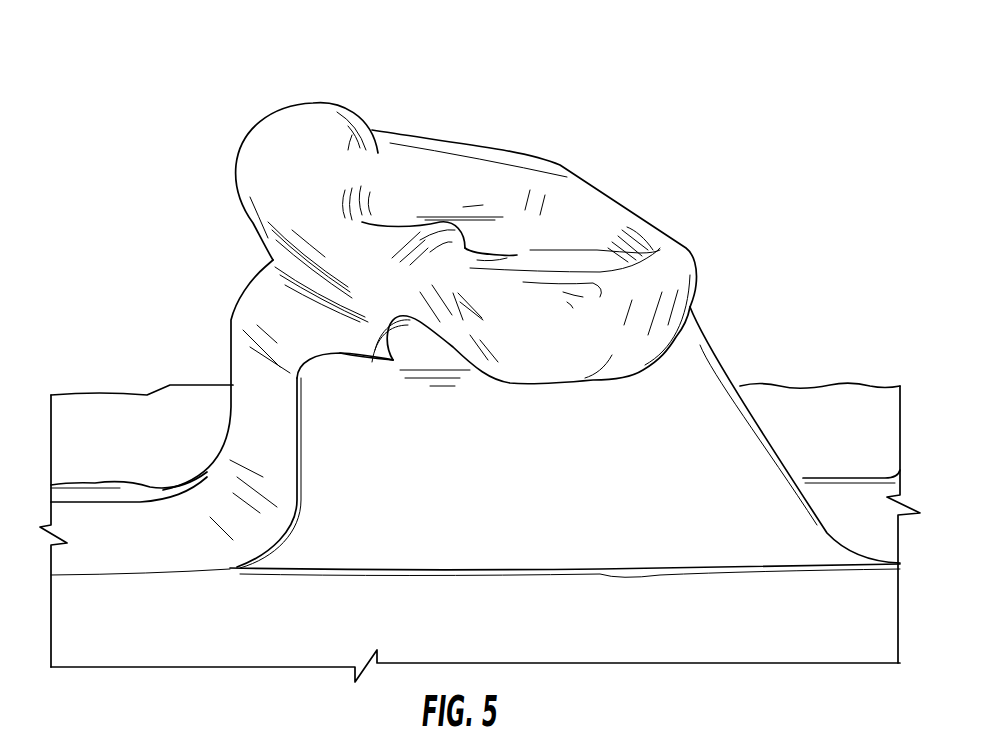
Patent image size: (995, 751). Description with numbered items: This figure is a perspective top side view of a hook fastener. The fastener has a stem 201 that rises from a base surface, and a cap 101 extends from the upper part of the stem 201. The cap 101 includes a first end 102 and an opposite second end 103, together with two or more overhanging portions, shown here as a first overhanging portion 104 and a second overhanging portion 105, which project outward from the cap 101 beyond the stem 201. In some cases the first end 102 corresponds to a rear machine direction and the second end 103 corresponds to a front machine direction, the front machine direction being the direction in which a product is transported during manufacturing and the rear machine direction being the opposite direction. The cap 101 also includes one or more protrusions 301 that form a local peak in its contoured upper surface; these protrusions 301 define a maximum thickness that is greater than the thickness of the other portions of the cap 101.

The cap 101 is at (465, 180).
The first end 102 is at (286, 227).
The second end 103 is at (645, 240).
The first overhanging portion 104 is at (338, 100).
The second overhanging portion 105 is at (553, 345).
The stem 201 is at (608, 467).
The protrusions 301 is at (440, 245).